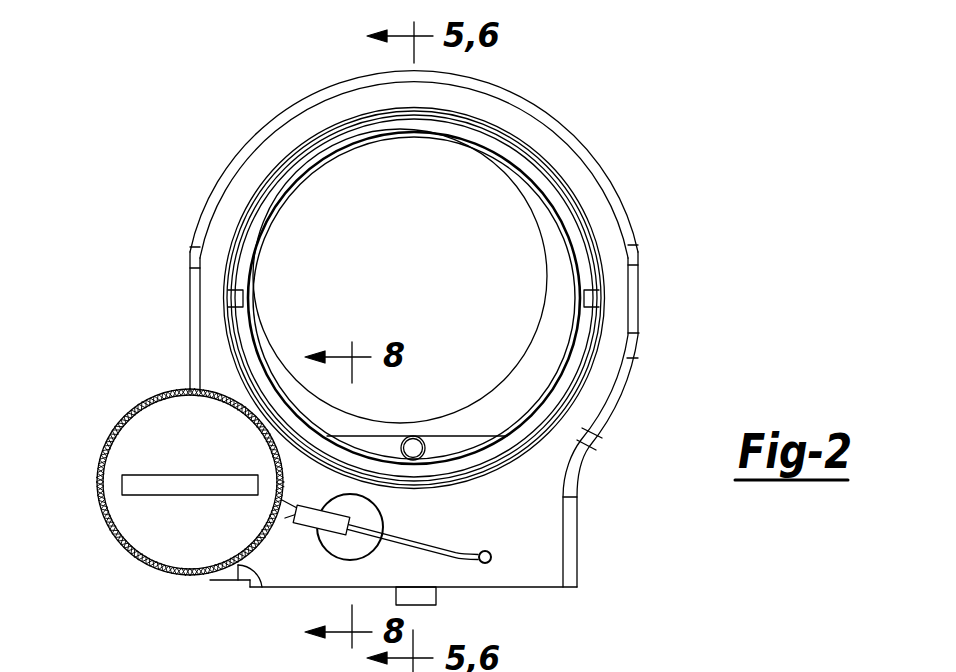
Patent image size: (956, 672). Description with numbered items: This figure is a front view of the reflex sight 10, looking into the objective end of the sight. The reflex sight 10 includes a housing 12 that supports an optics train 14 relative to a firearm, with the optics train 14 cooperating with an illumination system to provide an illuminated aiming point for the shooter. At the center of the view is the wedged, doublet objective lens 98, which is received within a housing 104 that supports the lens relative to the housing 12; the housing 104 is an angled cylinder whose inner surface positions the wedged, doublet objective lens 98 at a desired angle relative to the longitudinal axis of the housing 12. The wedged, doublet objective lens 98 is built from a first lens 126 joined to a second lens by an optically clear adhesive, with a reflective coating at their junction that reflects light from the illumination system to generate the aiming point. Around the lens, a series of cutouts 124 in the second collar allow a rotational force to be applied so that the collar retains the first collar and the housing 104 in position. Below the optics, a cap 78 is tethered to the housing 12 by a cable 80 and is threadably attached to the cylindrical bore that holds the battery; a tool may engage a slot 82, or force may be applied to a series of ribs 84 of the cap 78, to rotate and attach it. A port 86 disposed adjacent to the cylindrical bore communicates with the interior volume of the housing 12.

The reflex sight 10 is at (683, 122).
The housing 12 is at (553, 155).
The optics train 14 is at (498, 270).
The cap 78 is at (132, 461).
The cable 80 is at (432, 553).
The slot 82 is at (142, 485).
The ribs 84 is at (120, 430).
The port 86 is at (358, 509).
The wedged, doublet objective lens 98 is at (487, 225).
The housing 104 is at (518, 403).
The cutouts 124 is at (588, 297).
The first lens 126 is at (410, 170).